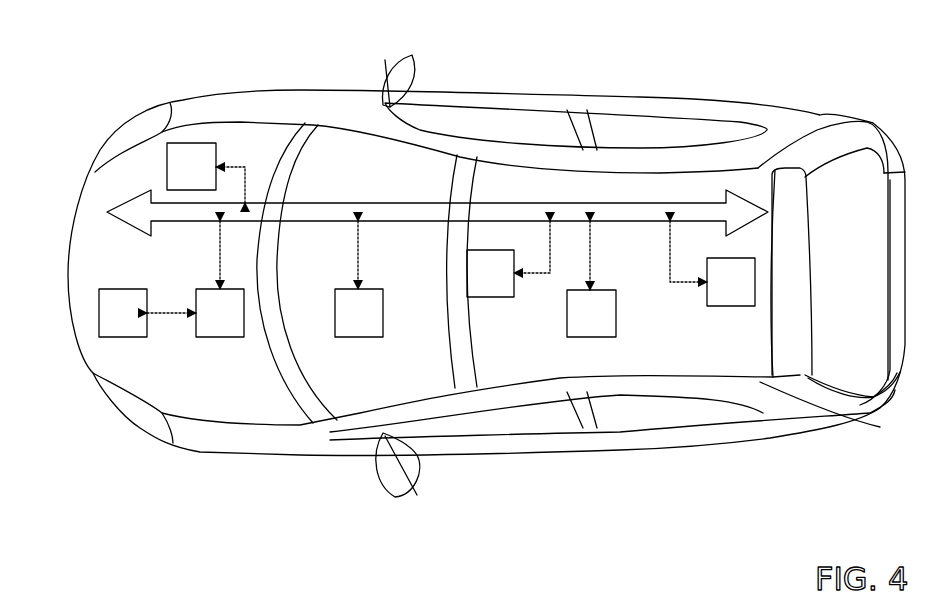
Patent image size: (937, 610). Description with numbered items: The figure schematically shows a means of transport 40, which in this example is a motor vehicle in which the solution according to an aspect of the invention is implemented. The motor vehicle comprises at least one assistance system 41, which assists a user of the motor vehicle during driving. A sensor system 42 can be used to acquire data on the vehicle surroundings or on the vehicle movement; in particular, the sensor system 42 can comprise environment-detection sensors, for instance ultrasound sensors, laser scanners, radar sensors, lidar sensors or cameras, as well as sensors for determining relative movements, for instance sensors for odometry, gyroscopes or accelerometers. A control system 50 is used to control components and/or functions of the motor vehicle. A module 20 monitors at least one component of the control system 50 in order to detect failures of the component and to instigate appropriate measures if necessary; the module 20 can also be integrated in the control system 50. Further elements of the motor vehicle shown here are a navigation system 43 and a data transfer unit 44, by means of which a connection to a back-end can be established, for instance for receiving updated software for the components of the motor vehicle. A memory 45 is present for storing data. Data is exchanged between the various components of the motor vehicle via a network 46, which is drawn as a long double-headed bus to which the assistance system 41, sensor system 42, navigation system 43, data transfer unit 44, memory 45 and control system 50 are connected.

The means of transport 40 is at (783, 103).
The network 46 is at (642, 205).
The assistance system 41 is at (195, 143).
The sensor system 42 is at (490, 250).
The navigation system 43 is at (358, 337).
The data transfer unit 44 is at (590, 337).
The memory 45 is at (735, 306).
The module 20 is at (123, 337).
The control system 50 is at (220, 337).